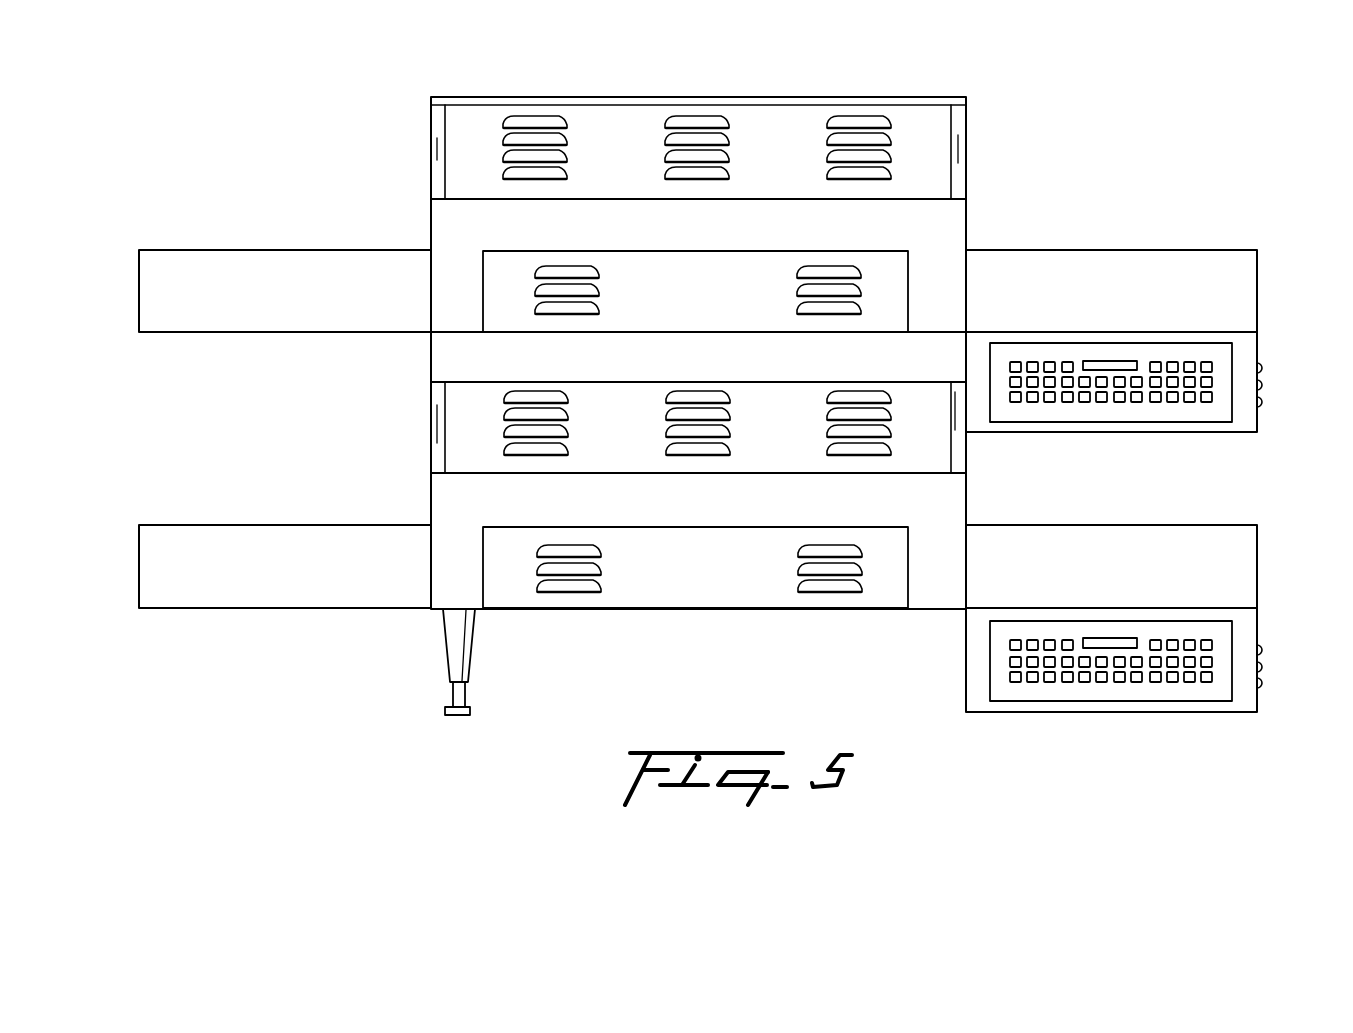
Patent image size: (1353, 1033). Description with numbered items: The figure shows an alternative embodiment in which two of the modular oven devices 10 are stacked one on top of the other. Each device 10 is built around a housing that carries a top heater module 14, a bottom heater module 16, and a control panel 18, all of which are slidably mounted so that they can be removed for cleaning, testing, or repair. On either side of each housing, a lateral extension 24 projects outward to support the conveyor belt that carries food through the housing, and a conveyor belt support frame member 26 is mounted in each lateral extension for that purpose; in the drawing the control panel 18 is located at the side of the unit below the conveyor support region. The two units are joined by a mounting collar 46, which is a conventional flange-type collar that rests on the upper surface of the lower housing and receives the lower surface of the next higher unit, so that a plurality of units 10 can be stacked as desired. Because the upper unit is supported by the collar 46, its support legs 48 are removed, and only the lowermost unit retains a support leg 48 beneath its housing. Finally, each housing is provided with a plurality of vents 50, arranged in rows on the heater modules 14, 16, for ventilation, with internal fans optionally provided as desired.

The device 10 is at (642, 353).
The top heater module 14 is at (932, 132).
The bottom heater module 16 is at (890, 283).
The control panel 18 is at (1222, 358).
The lateral extension 24 is at (200, 257).
The conveyor belt support frame member 26 is at (1128, 250).
The mounting collar 46 is at (447, 361).
The support legs 48 is at (457, 645).
The vents 50 is at (709, 317).